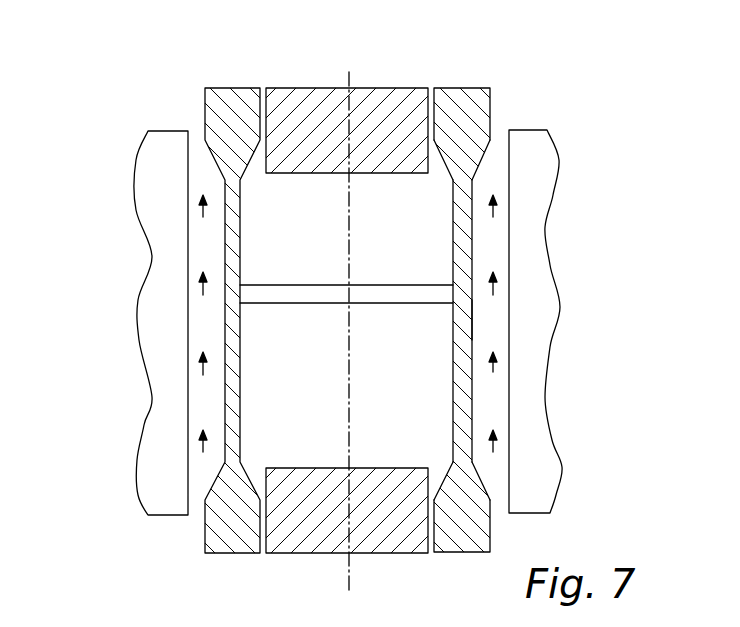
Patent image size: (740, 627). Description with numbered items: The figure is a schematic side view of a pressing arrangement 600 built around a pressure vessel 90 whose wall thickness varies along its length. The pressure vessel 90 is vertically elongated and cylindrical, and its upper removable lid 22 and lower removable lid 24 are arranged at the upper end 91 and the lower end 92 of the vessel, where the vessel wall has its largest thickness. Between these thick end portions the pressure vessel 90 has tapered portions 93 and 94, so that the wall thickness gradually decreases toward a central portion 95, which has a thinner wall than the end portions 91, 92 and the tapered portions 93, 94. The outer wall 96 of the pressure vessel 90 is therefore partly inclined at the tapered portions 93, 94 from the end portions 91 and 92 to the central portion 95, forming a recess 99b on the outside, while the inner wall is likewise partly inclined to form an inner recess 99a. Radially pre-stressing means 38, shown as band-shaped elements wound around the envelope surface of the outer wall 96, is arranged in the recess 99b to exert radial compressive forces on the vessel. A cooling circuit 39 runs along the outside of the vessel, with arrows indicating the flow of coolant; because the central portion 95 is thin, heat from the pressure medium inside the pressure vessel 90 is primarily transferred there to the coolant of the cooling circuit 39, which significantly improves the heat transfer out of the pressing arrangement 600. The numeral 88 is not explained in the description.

The pressing arrangement 600 is at (399, 54).
The upper removable lid 22 is at (330, 88).
The lower removable lid 24 is at (318, 555).
The radially pre-stressing means 38 is at (152, 397).
The cooling circuit 39 is at (203, 260).
The inner surface of sidewall 88 is at (453, 237).
The pressure vessel 90 is at (453, 89).
The upper end 91 is at (467, 108).
The lower end 92 is at (467, 520).
The tapered portion 93 is at (447, 157).
The tapered portion 94 is at (458, 480).
The central portion 95 is at (462, 262).
The outer wall 96 is at (472, 223).
The recess 99a is at (453, 308).
The recess 99b is at (472, 320).